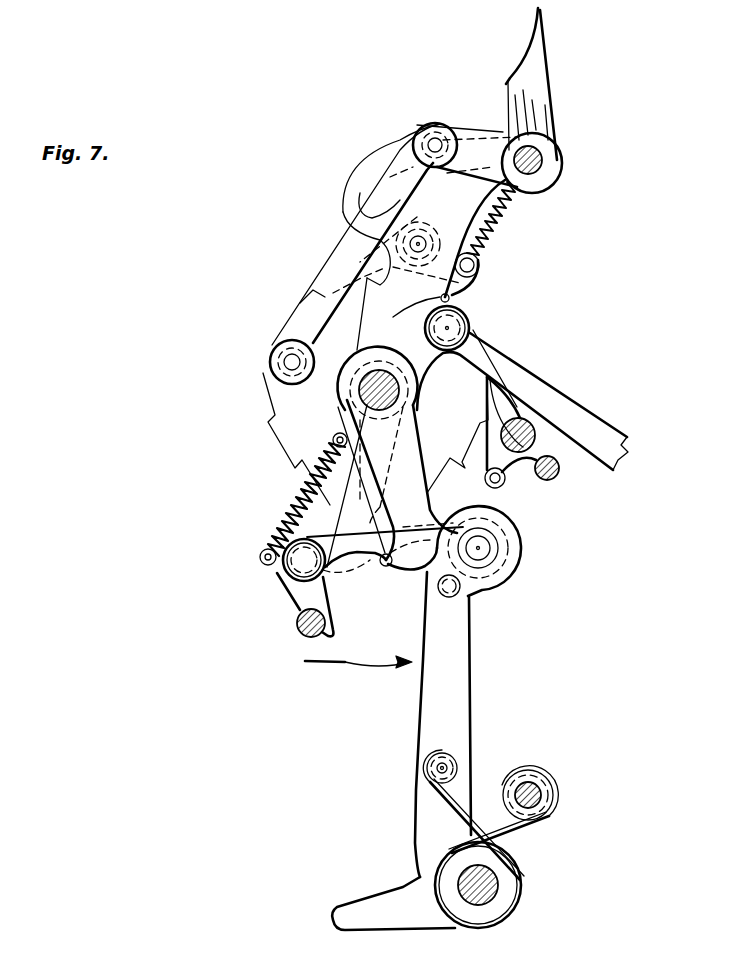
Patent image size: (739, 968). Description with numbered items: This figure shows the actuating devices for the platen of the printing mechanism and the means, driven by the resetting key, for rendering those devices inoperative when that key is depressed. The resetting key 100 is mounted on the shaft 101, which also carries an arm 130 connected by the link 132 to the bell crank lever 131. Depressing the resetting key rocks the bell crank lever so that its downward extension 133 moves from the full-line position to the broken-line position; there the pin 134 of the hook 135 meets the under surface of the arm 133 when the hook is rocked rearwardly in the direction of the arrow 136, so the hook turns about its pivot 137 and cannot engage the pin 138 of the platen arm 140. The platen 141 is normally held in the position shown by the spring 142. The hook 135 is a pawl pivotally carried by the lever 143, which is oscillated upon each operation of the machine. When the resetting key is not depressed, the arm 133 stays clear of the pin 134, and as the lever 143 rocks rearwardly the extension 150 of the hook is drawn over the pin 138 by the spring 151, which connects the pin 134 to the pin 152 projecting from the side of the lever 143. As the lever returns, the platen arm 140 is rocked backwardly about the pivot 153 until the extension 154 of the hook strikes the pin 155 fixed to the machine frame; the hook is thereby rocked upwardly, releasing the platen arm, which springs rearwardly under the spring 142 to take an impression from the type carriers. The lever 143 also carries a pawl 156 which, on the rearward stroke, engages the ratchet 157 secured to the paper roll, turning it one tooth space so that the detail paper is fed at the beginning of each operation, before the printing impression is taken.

The resetting key 100 is at (530, 107).
The shaft 101 is at (543, 168).
The arm 130 is at (473, 147).
The bell crank lever 131 is at (317, 380).
The link 132 is at (333, 277).
The downward extension 133 is at (413, 517).
The pin 134 is at (260, 553).
The hook 135 is at (335, 562).
The arrow 136 is at (383, 670).
The pivot 137 is at (285, 583).
The pin 138 is at (450, 598).
The platen arm 140 is at (440, 723).
The platen 141 is at (510, 551).
The spring 142 is at (453, 797).
The lever 143 is at (453, 293).
The extension 150 is at (387, 567).
The spring 151 is at (293, 500).
The pin 152 is at (337, 432).
The pivot 153 is at (500, 883).
The extension 154 is at (323, 623).
The pin 155 is at (333, 656).
The pawl 156 is at (480, 267).
The ratchet 157 is at (462, 365).